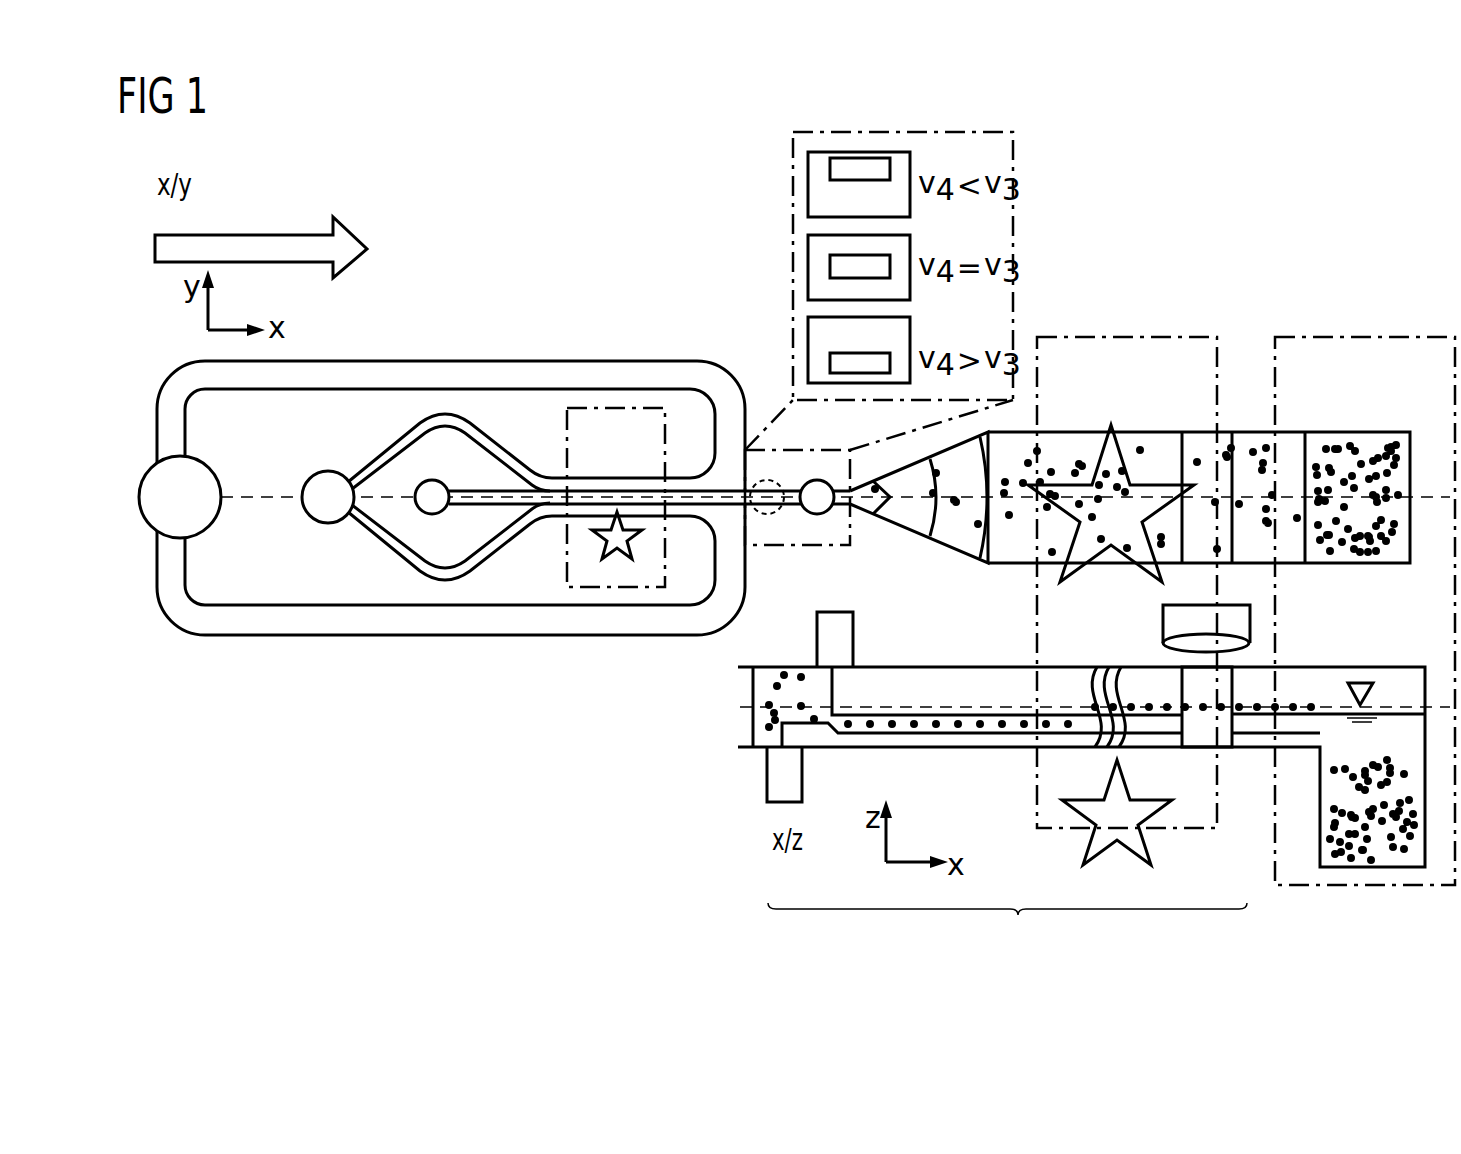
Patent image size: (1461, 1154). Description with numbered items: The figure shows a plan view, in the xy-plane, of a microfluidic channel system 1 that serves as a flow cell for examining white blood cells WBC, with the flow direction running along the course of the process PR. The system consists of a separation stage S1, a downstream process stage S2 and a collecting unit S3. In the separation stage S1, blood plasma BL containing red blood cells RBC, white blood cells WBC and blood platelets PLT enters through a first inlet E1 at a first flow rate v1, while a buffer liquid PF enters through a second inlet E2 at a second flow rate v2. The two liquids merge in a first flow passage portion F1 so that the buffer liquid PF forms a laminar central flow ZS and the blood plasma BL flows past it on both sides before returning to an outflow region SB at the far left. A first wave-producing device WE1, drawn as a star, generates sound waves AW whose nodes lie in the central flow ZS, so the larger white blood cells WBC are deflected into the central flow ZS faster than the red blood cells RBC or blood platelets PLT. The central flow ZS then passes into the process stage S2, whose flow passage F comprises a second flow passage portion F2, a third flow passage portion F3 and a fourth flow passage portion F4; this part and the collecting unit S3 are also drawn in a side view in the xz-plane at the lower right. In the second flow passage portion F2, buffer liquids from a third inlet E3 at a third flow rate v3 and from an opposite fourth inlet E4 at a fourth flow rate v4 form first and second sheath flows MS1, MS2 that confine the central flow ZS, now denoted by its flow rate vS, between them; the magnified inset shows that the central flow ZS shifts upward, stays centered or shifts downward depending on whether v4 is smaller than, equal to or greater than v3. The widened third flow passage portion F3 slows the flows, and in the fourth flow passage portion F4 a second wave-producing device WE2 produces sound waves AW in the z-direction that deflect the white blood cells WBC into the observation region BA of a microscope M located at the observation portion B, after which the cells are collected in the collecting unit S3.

The microfluidic channel system 1 is at (1303, 144).
The outflow region SB is at (150, 483).
The blood plasma BL is at (317, 483).
The first inlet E1 is at (328, 472).
The buffer liquid PF is at (397, 458).
The second inlet E2 is at (443, 475).
The central flow ZS is at (525, 500).
The blood platelets PLT is at (443, 417).
The first flow passage portion F1 is at (628, 417).
The first wave-producing device WE1 is at (607, 545).
The first flow rate v1 is at (328, 517).
The second flow rate v2 is at (433, 518).
The red blood cells RBC is at (442, 574).
The white blood cells WBC is at (465, 570).
The separation stage S1 is at (222, 683).
The process PR is at (245, 235).
The second flow passage portion F2 is at (790, 478).
The third flow rate v3 is at (768, 515).
The fourth flow rate v4 is at (818, 513).
The third flow passage portion F3 is at (936, 540).
The process stage S2 is at (1120, 318).
The collecting unit S3 is at (1370, 318).
The fourth flow passage portion F4 is at (1072, 432).
The observation portion B is at (1203, 440).
The second wave-producing device WE2 is at (1097, 555).
The sound waves AW is at (1105, 660).
The microscope M is at (1250, 628).
The observation region BA is at (1443, 707).
The third inlet E3 is at (817, 636).
The fourth inlet E4 is at (767, 773).
The first sheath flow MS1 is at (988, 680).
The second sheath flow MS2 is at (988, 745).
The flow rate of the central flow vS is at (933, 727).
The flow passage F is at (1007, 930).